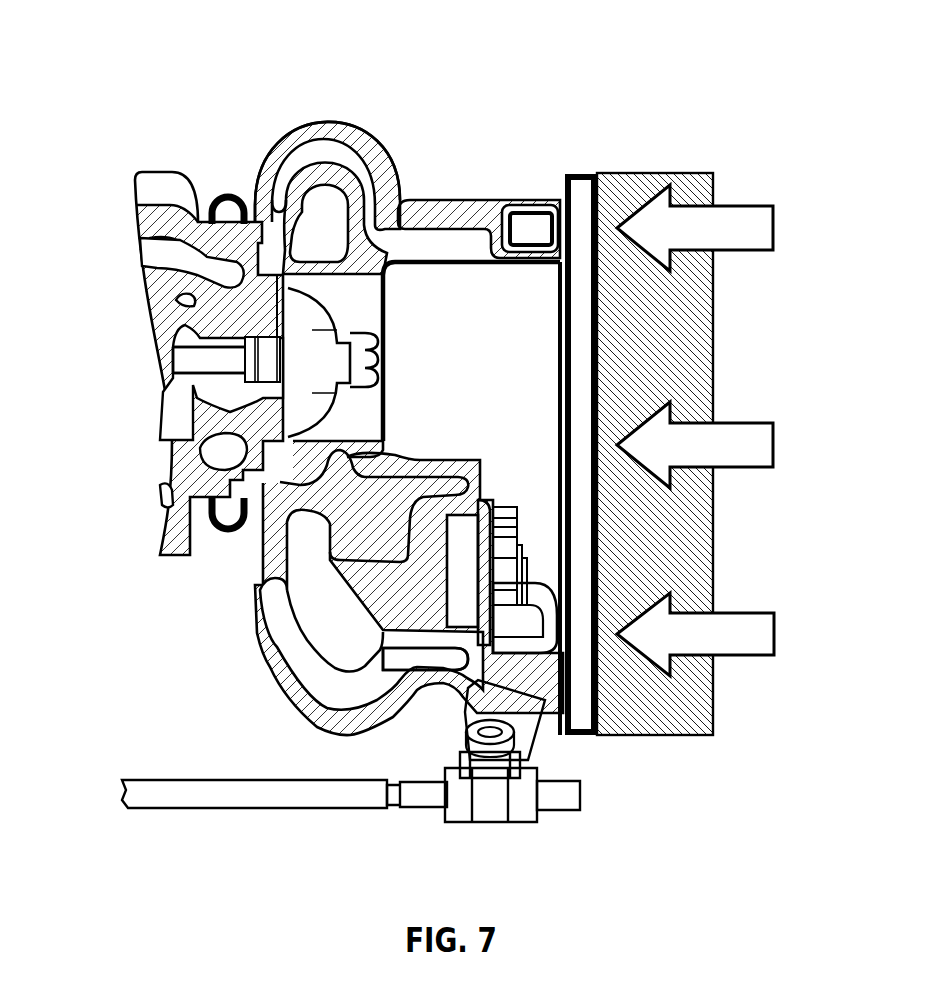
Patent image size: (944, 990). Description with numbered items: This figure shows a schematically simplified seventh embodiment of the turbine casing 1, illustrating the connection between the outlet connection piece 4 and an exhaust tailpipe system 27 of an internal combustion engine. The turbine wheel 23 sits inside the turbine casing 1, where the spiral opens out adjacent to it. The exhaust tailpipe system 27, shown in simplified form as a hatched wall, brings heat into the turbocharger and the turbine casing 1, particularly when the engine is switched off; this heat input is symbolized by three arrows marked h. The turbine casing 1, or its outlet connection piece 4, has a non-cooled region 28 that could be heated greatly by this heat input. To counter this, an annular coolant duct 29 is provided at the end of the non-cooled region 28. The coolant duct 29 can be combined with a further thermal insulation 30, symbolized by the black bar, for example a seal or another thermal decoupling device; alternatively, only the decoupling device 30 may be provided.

The turbine casing 1 is at (236, 135).
The outlet connection piece 4 is at (435, 170).
The turbine wheel 23 is at (305, 357).
The exhaust tailpipe system 27 is at (683, 548).
The non-cooled region 28 is at (462, 210).
The annular coolant duct 29 is at (538, 237).
The thermal insulation 30 is at (583, 203).